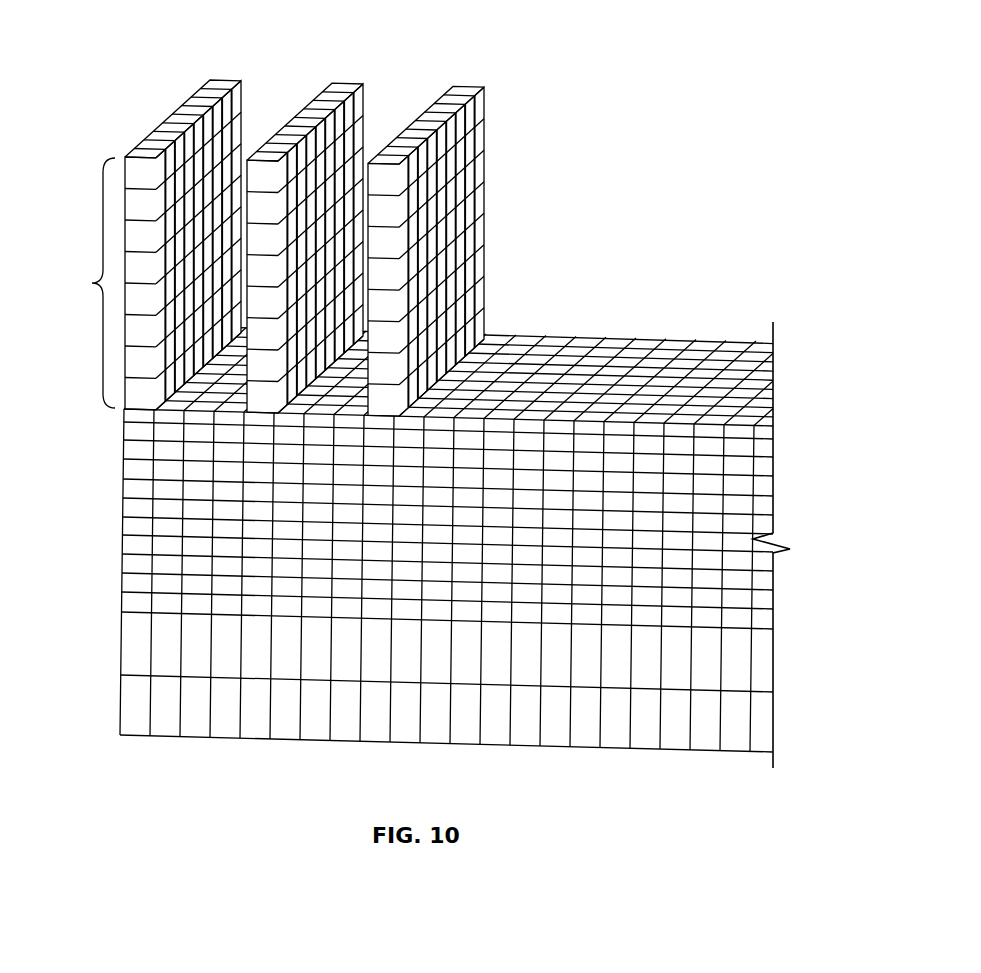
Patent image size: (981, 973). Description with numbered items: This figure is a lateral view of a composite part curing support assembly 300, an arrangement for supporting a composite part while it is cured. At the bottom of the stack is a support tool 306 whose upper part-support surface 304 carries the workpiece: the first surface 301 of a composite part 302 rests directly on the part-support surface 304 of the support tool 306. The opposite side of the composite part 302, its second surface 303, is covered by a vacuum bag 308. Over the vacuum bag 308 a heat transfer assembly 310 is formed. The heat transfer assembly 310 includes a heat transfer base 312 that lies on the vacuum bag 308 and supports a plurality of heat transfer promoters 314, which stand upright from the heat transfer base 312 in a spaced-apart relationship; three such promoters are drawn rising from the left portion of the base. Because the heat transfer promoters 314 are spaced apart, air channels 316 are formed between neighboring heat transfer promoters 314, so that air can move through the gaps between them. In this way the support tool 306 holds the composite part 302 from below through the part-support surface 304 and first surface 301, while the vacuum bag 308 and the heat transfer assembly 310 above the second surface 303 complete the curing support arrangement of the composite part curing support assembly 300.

The composite part curing support assembly 300 is at (112, 82).
The first surface 301 is at (135, 603).
The composite part 302 is at (122, 545).
The second surface 303 is at (680, 455).
The part-support surface 304 is at (197, 613).
The support tool 306 is at (117, 712).
The vacuum bag 308 is at (125, 435).
The heat transfer assembly 310 is at (82, 283).
The heat transfer base 312 is at (128, 413).
The heat transfer promoters 314 is at (242, 76).
The air channels 316 is at (275, 103).